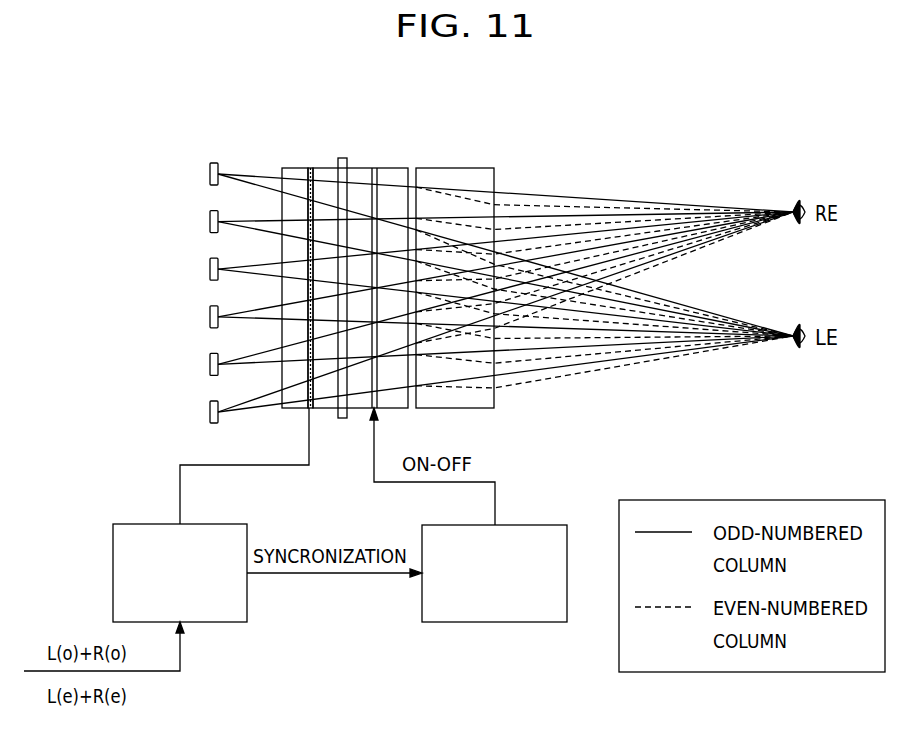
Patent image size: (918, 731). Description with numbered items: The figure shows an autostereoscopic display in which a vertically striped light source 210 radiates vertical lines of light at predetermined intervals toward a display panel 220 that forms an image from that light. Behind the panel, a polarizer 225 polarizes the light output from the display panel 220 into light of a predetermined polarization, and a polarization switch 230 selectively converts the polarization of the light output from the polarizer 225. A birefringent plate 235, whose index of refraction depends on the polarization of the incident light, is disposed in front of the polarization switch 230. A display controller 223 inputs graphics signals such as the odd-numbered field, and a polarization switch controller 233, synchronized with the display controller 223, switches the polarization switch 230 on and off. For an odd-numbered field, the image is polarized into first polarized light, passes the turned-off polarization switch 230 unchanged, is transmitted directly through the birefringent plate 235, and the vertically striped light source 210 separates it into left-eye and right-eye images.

The vertically striped light source 210 is at (213, 158).
The display panel 220 is at (305, 152).
The display controller 223 is at (113, 573).
The polarizer 225 is at (344, 158).
The polarization switch 230 is at (385, 152).
The polarization switch controller 233 is at (495, 622).
The birefringent plate 235 is at (461, 168).